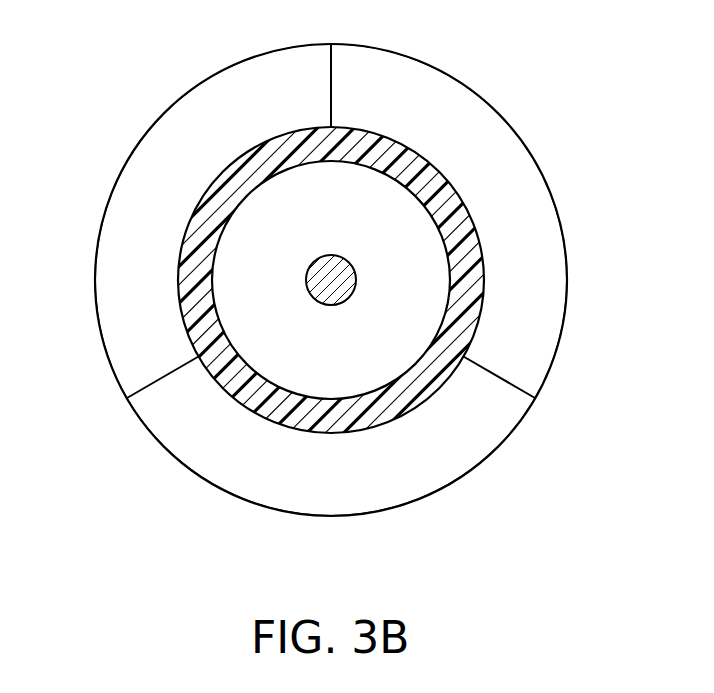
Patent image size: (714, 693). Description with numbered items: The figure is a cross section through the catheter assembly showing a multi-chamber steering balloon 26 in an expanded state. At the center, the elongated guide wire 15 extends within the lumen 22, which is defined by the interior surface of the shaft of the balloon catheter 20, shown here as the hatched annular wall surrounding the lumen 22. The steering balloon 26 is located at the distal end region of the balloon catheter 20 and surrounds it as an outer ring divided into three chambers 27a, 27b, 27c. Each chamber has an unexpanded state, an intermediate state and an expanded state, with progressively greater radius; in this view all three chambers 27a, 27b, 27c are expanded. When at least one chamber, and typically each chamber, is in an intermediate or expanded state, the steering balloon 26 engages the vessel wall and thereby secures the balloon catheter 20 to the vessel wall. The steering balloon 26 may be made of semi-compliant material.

The elongated guide wire 15 is at (322, 274).
The balloon catheter 20 is at (257, 415).
The lumen 22 is at (416, 360).
The steering balloon 26 is at (423, 63).
The chamber 27a is at (521, 137).
The chamber 27b is at (351, 516).
The chamber 27c is at (113, 187).